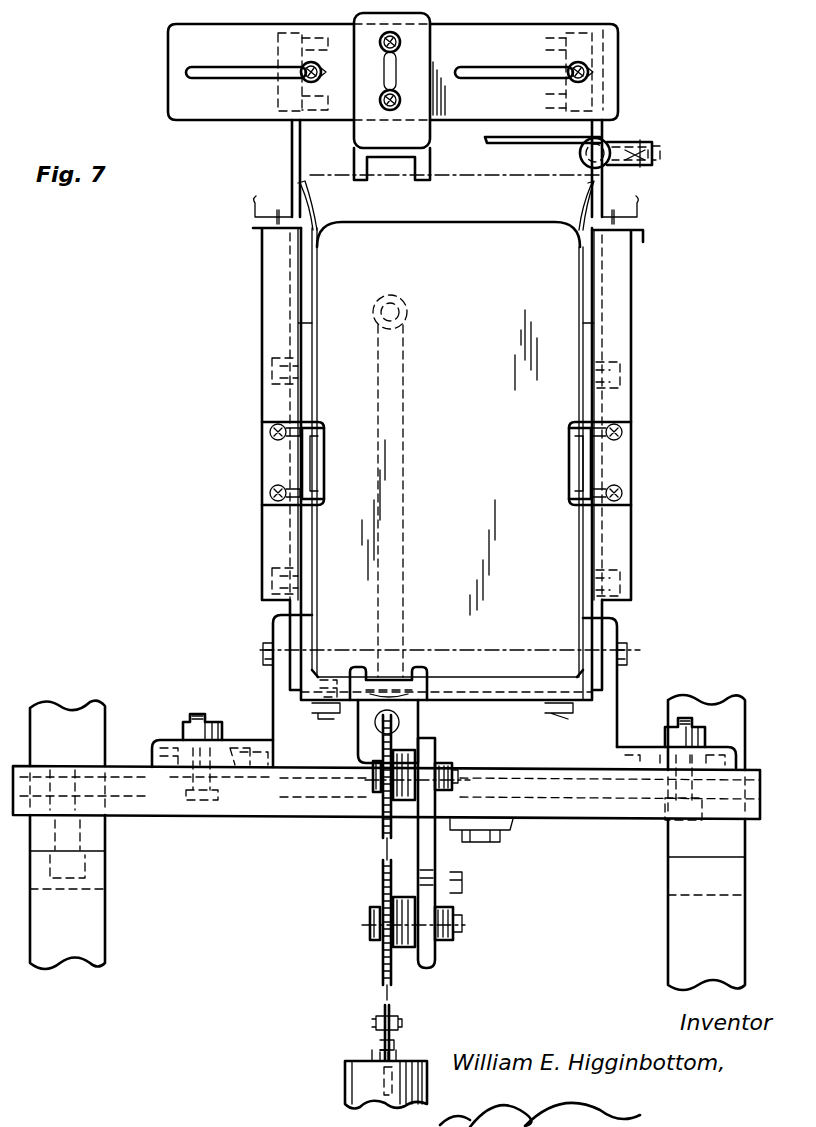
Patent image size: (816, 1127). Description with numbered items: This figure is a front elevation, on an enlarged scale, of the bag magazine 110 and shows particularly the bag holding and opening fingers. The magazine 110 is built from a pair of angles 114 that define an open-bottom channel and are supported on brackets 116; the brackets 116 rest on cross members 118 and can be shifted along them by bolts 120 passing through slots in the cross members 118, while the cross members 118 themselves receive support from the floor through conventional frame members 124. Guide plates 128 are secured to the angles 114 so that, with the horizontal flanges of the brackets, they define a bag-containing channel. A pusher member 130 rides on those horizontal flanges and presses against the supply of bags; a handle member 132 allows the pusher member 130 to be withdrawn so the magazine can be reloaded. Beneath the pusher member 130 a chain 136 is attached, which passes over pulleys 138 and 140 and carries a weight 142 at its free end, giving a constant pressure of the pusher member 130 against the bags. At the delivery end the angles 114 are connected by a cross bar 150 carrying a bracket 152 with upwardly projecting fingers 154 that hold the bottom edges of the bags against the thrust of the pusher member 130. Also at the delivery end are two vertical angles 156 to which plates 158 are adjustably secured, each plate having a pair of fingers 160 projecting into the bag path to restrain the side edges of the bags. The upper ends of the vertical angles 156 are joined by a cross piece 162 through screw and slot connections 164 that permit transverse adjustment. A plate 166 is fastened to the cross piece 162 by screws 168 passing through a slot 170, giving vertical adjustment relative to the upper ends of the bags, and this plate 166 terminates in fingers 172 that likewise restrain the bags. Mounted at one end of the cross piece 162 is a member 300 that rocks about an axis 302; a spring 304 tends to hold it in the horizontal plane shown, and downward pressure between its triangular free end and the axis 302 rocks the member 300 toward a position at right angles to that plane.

The magazine 110 is at (492, 338).
The angles 114 is at (304, 632).
The brackets 116 is at (268, 702).
The cross members 118 is at (162, 817).
The bolts 120 is at (192, 720).
The frame members 124 is at (95, 932).
The guide plates 128 is at (318, 296).
The pusher member 130 is at (530, 217).
The handle member 132 is at (378, 378).
The chain 136 is at (372, 1016).
The pulley 138 is at (383, 823).
The pulley 140 is at (380, 960).
The weight 142 is at (345, 1074).
The cross bar 150 is at (538, 700).
The bracket 152 is at (427, 704).
The fingers 154 is at (422, 668).
The vertical angles 156 is at (262, 316).
The plates 158 is at (270, 460).
The fingers 160 is at (326, 496).
The cross piece 162 is at (170, 40).
The screw and slot connections 164 is at (300, 78).
The plate 166 is at (356, 131).
The screws 168 is at (376, 59).
The slot 170 is at (396, 72).
The fingers 172 is at (412, 193).
The member 300 is at (492, 145).
The axis 302 is at (606, 148).
The spring 304 is at (656, 160).